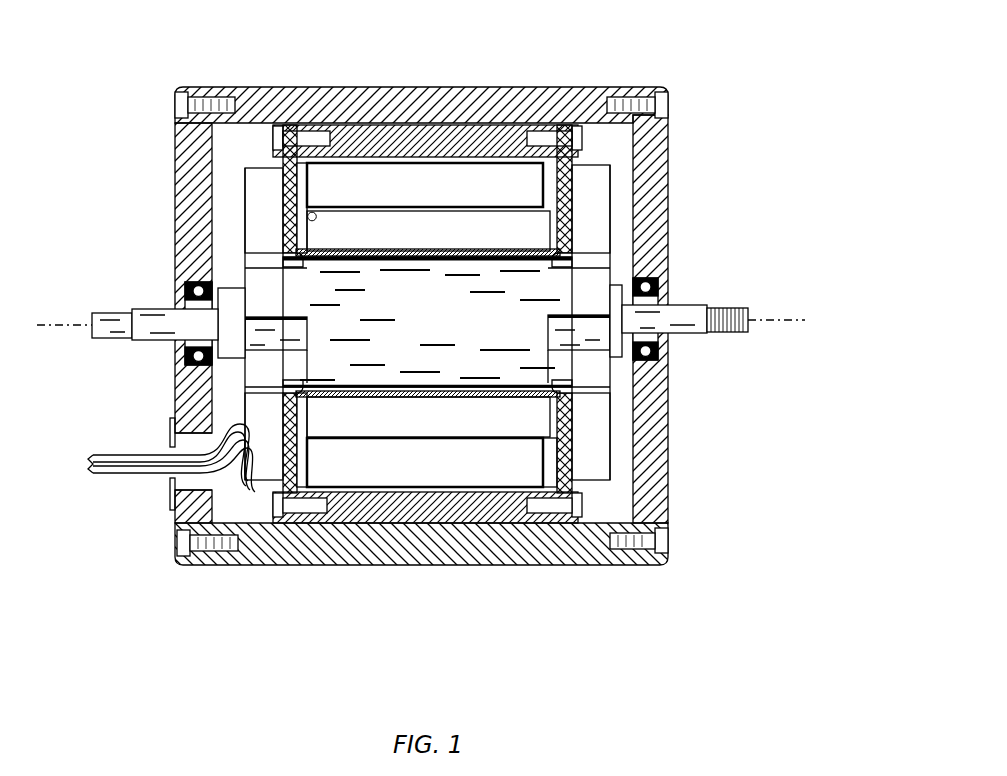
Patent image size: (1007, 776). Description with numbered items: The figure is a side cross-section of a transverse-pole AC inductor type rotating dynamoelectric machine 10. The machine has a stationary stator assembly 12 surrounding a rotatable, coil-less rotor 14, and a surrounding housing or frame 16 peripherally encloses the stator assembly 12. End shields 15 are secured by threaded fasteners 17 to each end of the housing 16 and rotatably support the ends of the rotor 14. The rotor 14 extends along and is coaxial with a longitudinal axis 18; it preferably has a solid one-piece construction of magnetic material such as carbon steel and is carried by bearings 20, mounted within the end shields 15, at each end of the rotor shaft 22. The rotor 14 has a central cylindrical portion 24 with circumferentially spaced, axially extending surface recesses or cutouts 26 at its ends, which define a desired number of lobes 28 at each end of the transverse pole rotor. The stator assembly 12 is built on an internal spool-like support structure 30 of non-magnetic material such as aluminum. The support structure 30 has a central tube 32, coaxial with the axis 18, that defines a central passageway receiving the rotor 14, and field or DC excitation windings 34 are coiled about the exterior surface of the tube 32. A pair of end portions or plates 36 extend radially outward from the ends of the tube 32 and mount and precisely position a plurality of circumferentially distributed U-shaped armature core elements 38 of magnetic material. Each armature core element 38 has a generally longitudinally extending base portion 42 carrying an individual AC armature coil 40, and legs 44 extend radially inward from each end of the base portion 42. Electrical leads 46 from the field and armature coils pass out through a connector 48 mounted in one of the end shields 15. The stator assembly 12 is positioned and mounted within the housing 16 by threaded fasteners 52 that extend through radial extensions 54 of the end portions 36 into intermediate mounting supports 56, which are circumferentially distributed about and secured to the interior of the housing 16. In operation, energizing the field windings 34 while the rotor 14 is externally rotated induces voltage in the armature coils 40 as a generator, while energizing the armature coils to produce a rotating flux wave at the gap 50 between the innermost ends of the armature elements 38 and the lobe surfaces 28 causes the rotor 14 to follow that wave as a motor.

The dynamoelectric machine 10 is at (322, 673).
The stator assembly 12 is at (218, 146).
The rotor 14 is at (427, 322).
The end shields 15 is at (670, 175).
The housing 16 is at (385, 95).
The threaded fasteners 17 is at (668, 100).
The longitudinal axis 18 is at (785, 318).
The bearings 20 is at (195, 290).
The rotor shaft 22 is at (680, 335).
The central cylindrical portion 24 is at (312, 297).
The surface recesses 26 is at (579, 349).
The lobes 28 is at (580, 290).
The support structure 30 is at (283, 187).
The tube 32 is at (290, 235).
The field windings 34 is at (557, 435).
The end portions 36 is at (572, 185).
The armature core elements 38 is at (593, 468).
The armature coil 40 is at (425, 470).
The base portion 42 is at (316, 530).
The legs 44 is at (263, 432).
The electrical leads 46 is at (170, 465).
The connector 48 is at (173, 450).
The gap 50 is at (593, 390).
The threaded fasteners 52 is at (633, 550).
The radial extensions 54 is at (595, 555).
The mounting supports 56 is at (400, 505).